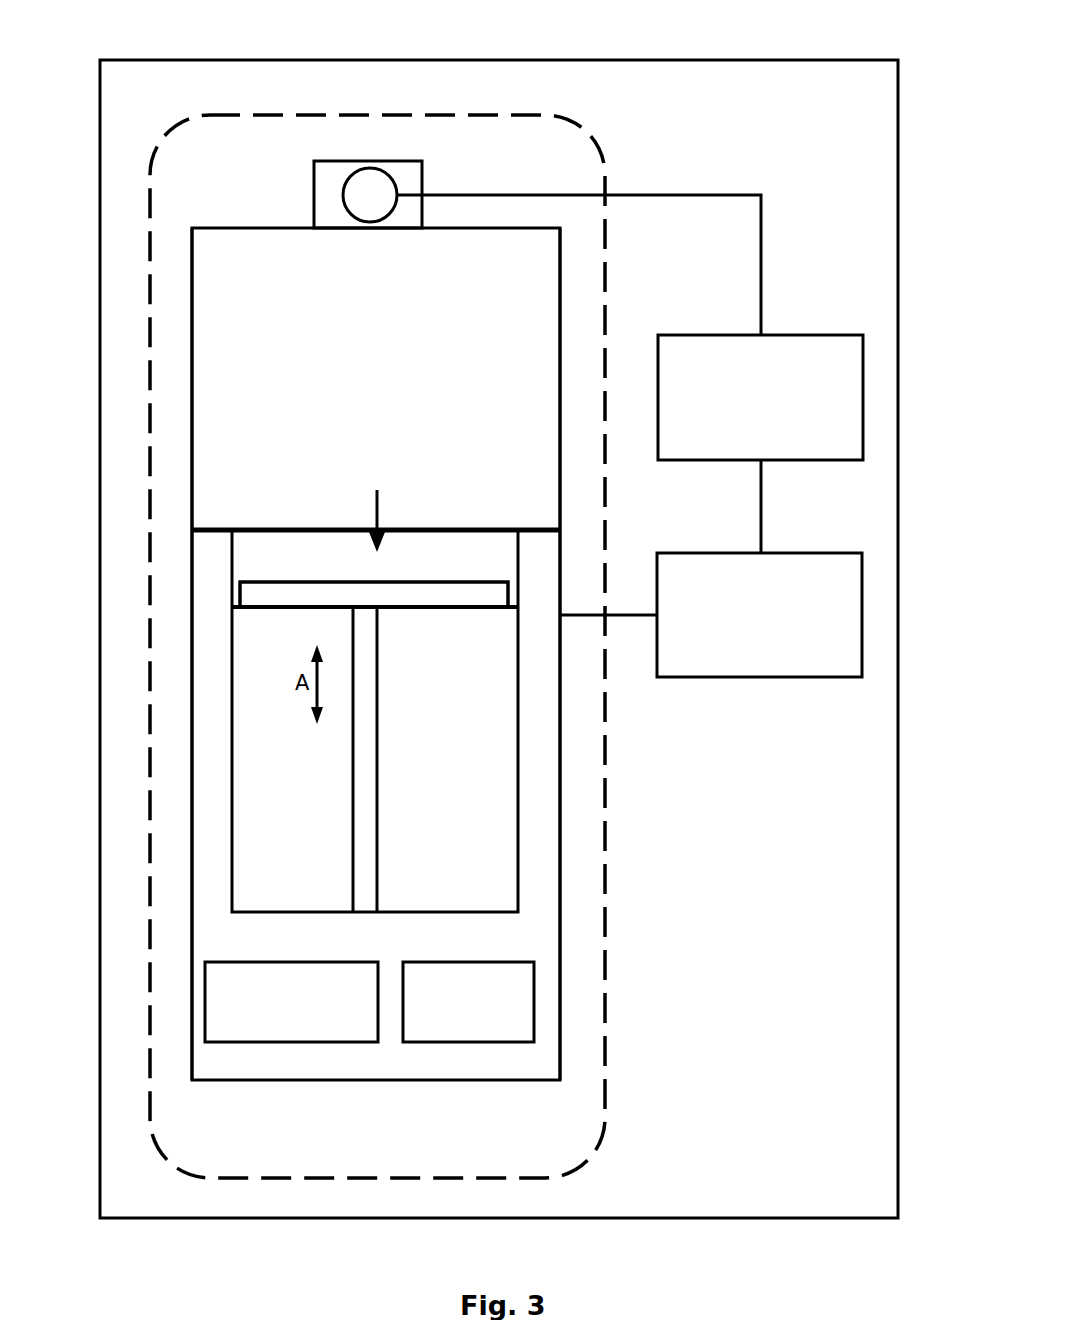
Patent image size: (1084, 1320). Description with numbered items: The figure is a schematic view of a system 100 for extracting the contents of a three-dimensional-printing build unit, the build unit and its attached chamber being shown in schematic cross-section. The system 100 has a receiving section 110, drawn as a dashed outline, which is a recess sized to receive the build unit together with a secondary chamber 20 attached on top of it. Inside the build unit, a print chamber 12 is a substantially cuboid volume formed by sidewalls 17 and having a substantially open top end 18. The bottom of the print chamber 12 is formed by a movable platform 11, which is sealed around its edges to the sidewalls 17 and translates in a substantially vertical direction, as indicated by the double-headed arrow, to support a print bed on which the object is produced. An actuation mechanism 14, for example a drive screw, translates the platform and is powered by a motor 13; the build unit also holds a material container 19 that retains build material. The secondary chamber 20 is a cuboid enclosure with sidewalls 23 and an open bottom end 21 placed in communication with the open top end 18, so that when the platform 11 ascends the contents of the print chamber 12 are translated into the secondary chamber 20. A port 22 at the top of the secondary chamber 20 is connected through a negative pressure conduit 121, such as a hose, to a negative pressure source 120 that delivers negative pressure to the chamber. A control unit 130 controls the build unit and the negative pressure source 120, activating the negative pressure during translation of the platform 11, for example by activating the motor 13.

The system 100 is at (202, 60).
The receiving section 110 is at (192, 125).
The secondary chamber 20 is at (192, 336).
The sidewalls 23 is at (197, 400).
The port 22 is at (348, 198).
The negative pressure conduit 121 is at (657, 193).
The negative pressure source 120 is at (798, 333).
The control unit 130 is at (791, 553).
The open bottom end 21 is at (243, 514).
The sidewalls 17 is at (232, 688).
The movable platform 11 is at (240, 582).
The print chamber 12 is at (480, 562).
The open top end 18 is at (378, 506).
The actuation mechanism 14 is at (355, 820).
The material container 19 is at (302, 962).
The motor 13 is at (465, 962).